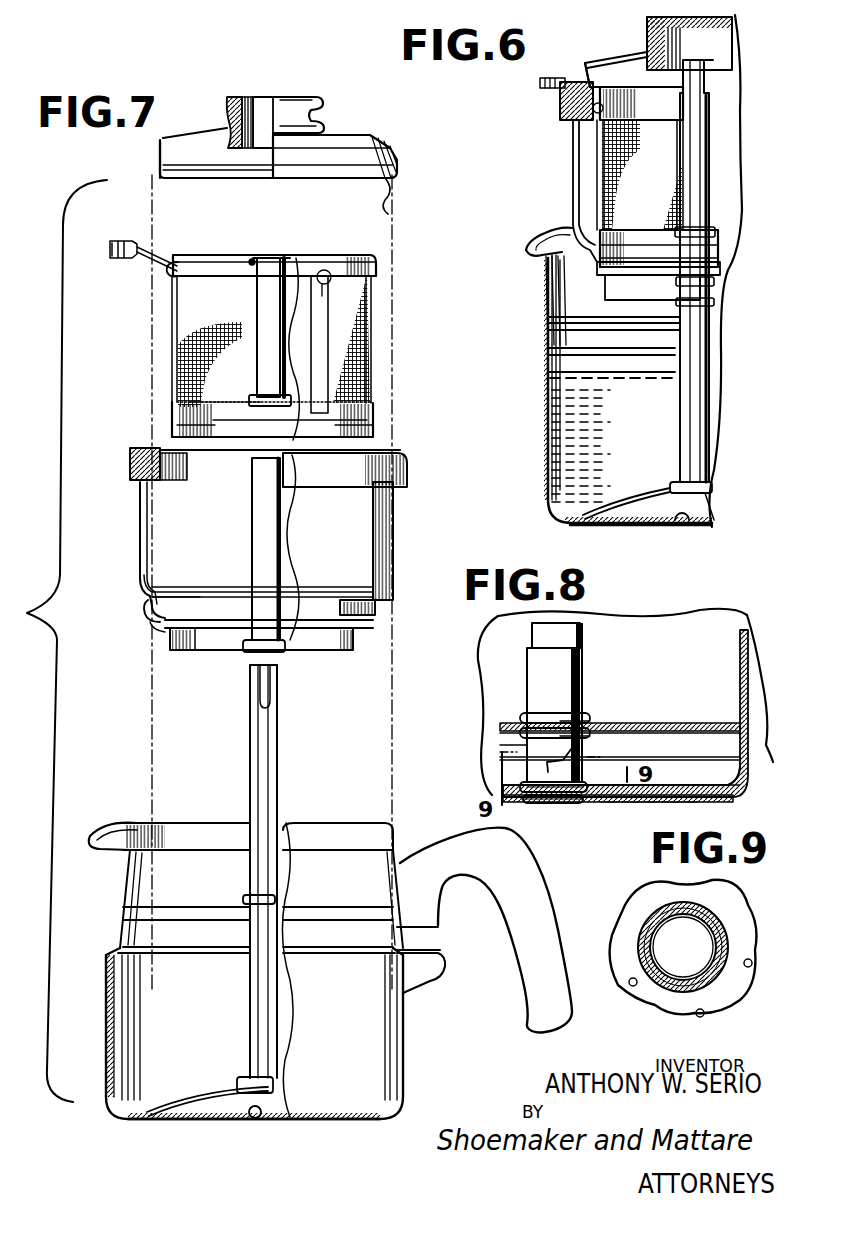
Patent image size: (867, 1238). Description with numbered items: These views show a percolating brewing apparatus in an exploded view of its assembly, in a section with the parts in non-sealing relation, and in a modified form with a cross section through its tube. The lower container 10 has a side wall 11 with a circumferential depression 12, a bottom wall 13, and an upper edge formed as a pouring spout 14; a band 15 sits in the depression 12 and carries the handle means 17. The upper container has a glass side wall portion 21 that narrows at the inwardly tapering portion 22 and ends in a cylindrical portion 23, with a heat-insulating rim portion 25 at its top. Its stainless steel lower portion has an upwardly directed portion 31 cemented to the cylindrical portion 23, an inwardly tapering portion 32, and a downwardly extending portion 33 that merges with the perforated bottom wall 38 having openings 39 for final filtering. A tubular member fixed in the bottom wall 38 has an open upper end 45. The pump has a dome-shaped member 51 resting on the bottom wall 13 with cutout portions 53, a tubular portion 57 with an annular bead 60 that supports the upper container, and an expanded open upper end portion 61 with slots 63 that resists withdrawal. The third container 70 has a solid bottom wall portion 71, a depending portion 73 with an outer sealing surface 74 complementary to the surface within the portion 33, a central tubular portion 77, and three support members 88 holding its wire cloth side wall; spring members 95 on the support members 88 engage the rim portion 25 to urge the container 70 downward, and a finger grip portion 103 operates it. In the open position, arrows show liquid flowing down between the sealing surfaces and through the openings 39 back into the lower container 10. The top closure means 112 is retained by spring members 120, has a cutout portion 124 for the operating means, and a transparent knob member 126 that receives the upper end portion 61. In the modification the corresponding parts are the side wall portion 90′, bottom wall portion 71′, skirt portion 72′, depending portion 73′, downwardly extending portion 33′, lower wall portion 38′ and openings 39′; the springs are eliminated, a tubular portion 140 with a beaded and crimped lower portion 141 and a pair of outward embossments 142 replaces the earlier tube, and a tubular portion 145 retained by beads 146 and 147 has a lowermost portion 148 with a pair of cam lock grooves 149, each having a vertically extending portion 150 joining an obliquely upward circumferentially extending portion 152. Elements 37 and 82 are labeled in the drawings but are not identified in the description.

In FIG. 7, the lower container 10 is at (400, 1040).
In FIG. 6, the lower container 10 is at (544, 486).
In FIG. 7, the side wall 11 is at (115, 1022).
In FIG. 6, the side wall 11 is at (547, 432).
In FIG. 7, the circumferential depression 12 is at (140, 965).
In FIG. 6, the circumferential depression 12 is at (550, 355).
In FIG. 7, the bottom wall 13 is at (180, 1122).
In FIG. 6, the bottom wall 13 is at (615, 527).
In FIG. 7, the pouring spout 14 is at (105, 835).
In FIG. 6, the pouring spout 14 is at (535, 243).
In FIG. 7, the band 15 is at (120, 935).
In FIG. 6, the band 15 is at (549, 330).
In FIG. 7, the handle means 17 is at (545, 889).
In FIG. 7, the side wall portion 21 is at (150, 520).
In FIG. 6, the side wall portion 21 is at (571, 182).
In FIG. 7, the inwardly tapering portion 22 is at (152, 582).
In FIG. 7, the downwardly extending cylindrical portion 23 is at (168, 600).
In FIG. 7, the rim portion 25 is at (140, 470).
In FIG. 6, the rim portion 25 is at (565, 120).
In FIG. 7, the cylindrical upwardly directed portion 31 is at (148, 612).
In FIG. 7, the inwardly tapering portion 32 is at (155, 628).
In FIG. 7, the downwardly extending portion 33 is at (180, 645).
In FIG. 7, the lower band 37 is at (187, 625).
In FIG. 7, the bottom wall 38 is at (228, 650).
In FIG. 6, the bottom wall 38 is at (592, 374).
In FIG. 7, the openings 39 is at (200, 648).
In FIG. 6, the openings 39 is at (652, 374).
In FIG. 7, the open upper end 45 is at (258, 525).
In FIG. 7, the dome-shaped member 51 is at (205, 1088).
In FIG. 6, the dome-shaped member 51 is at (633, 492).
In FIG. 7, the cutout portions 53 is at (255, 1120).
In FIG. 6, the cutout portions 53 is at (684, 523).
In FIG. 7, the tubular portion 57 is at (255, 795).
In FIG. 7, the annular bead 60 is at (245, 897).
In FIG. 6, the annular bead 60 is at (715, 304).
In FIG. 7, the open upper end portion 61 is at (276, 680).
In FIG. 6, the open upper end portion 61 is at (718, 63).
In FIG. 7, the longitudinally extending slots 63 is at (272, 706).
In FIG. 7, the third container means 70 is at (370, 370).
In FIG. 6, the third container means 70 is at (718, 185).
In FIG. 7, the solid bottom wall portion 71 is at (208, 400).
In FIG. 6, the solid bottom wall portion 71 is at (632, 228).
In FIG. 7, the depending portion 73 is at (200, 433).
In FIG. 7, the outer sealing surface 74 is at (177, 425).
In FIG. 6, the outer sealing surface 74 is at (715, 260).
In FIG. 7, the central tubular portion 77 is at (262, 305).
In FIG. 6, the central tubular portion 77 is at (705, 145).
In FIG. 7, the tube cap 82 is at (262, 257).
In FIG. 6, the tube cap 82 is at (712, 62).
In FIG. 7, the support portions 88 is at (182, 330).
In FIG. 7, the spring members 95 is at (168, 278).
In FIG. 7, the finger grip portion 103 is at (122, 240).
In FIG. 6, the finger grip portion 103 is at (540, 83).
In FIG. 7, the top closure means 112 is at (370, 128).
In FIG. 6, the top closure means 112 is at (607, 52).
In FIG. 7, the spring members 120 is at (392, 184).
In FIG. 7, the cutout portion 124 is at (160, 153).
In FIG. 6, the cutout portion 124 is at (586, 72).
In FIG. 7, the central portion 126 is at (253, 90).
In FIG. 6, the central portion 126 is at (645, 32).
In FIG. 8, the side wall portion 90′ is at (752, 660).
In FIG. 8, the lower wall portion 71′ is at (650, 723).
In FIG. 8, the skirt portion 72′ is at (740, 748).
In FIG. 8, the depending portion 73′ is at (745, 778).
In FIG. 8, the downwardly extending portion 33′ is at (748, 782).
In FIG. 8, the lower wall portion 38′ is at (640, 804).
In FIG. 9, the lower wall portion 38′ is at (652, 1000).
In FIG. 8, the openings 39′ is at (673, 803).
In FIG. 9, the openings 39′ is at (752, 960).
In FIG. 8, the tubular portion 140 is at (580, 782).
In FIG. 9, the tubular portion 140 is at (725, 925).
In FIG. 8, the lower portion 141 is at (568, 803).
In FIG. 9, the embossments 142 is at (655, 925).
In FIG. 8, the tubular portion 145 is at (585, 663).
In FIG. 8, the bead 146 is at (565, 717).
In FIG. 8, the bead 147 is at (587, 735).
In FIG. 8, the lowermost portion 148 is at (530, 748).
In FIG. 8, the cam lock grooves 149 is at (575, 762).
In FIG. 9, the cam lock grooves 149 is at (678, 898).
In FIG. 8, the vertically extending portion 150 is at (545, 803).
In FIG. 8, the circumferentially extending portion 152 is at (583, 749).